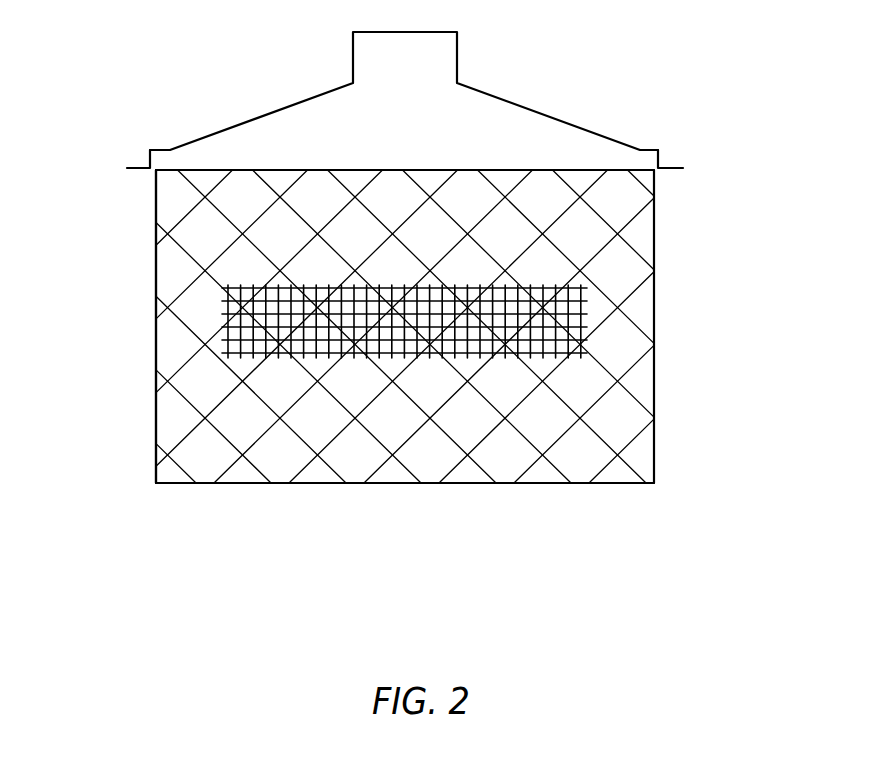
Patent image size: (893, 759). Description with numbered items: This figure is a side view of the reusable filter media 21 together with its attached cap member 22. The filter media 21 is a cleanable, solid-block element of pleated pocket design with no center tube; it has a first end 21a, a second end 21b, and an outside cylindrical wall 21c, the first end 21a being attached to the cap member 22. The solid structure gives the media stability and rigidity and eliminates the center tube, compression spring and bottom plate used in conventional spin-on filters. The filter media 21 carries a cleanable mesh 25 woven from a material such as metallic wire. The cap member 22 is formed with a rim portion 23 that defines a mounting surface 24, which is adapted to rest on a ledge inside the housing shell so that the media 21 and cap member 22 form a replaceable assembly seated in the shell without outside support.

The reusable filter media 21 is at (657, 488).
The first end 21a is at (654, 178).
The second end 21b is at (304, 489).
The outside cylindrical wall 21c is at (148, 312).
The cap member 22 is at (542, 125).
The rim portion 23 is at (686, 162).
The mounting surface 24 is at (150, 174).
The cleanable mesh 25 is at (593, 346).